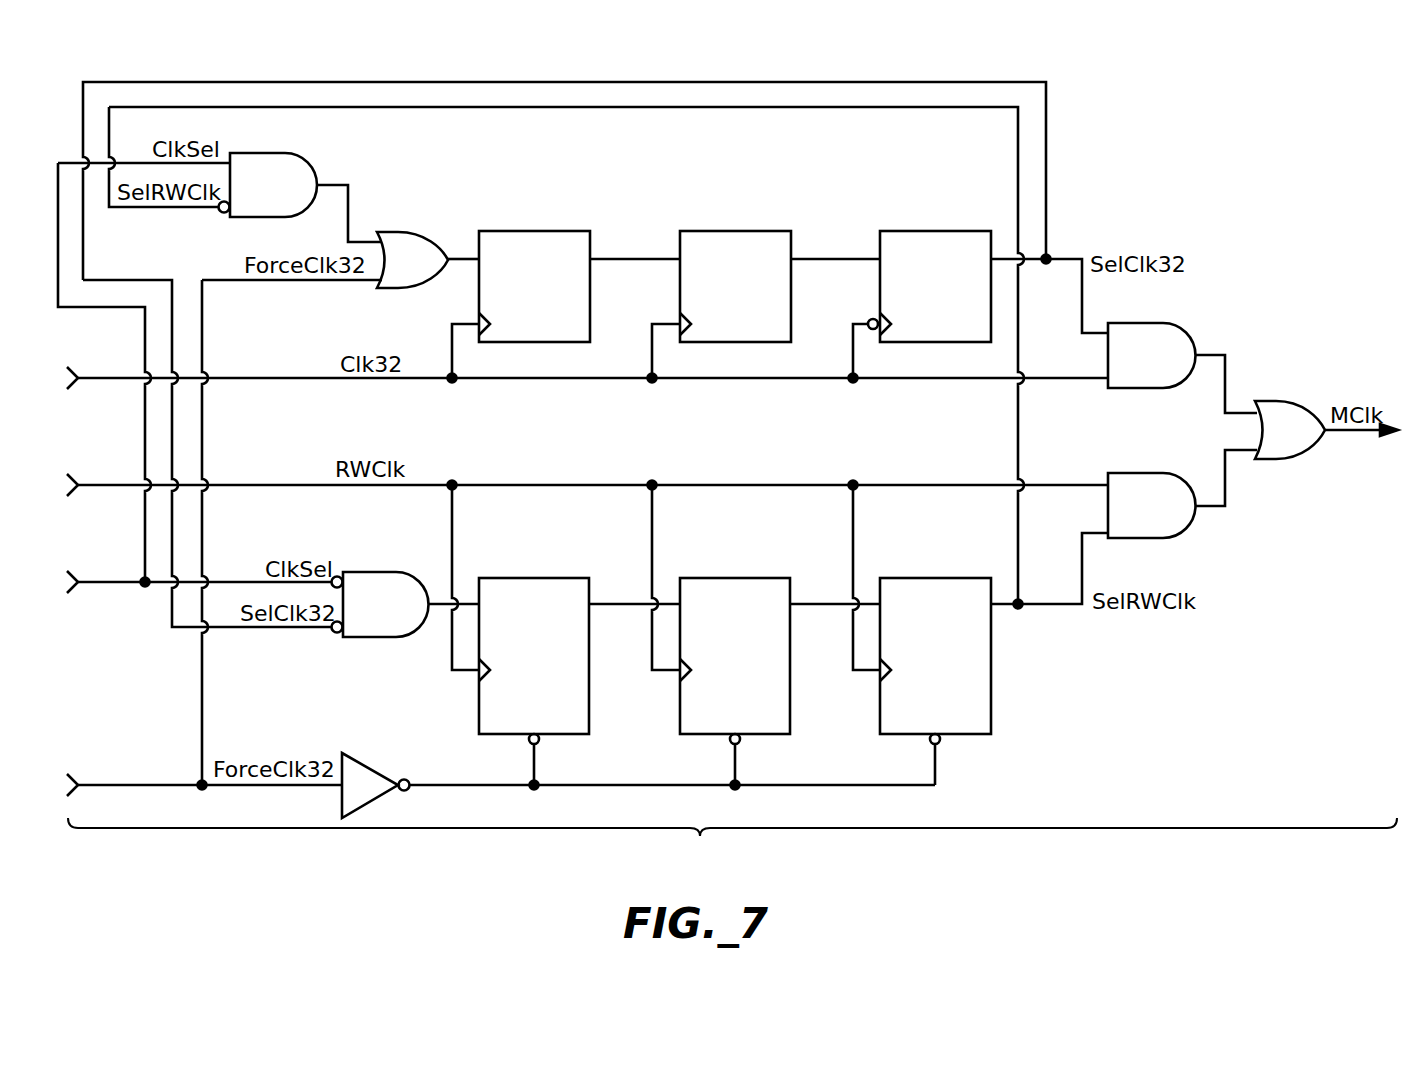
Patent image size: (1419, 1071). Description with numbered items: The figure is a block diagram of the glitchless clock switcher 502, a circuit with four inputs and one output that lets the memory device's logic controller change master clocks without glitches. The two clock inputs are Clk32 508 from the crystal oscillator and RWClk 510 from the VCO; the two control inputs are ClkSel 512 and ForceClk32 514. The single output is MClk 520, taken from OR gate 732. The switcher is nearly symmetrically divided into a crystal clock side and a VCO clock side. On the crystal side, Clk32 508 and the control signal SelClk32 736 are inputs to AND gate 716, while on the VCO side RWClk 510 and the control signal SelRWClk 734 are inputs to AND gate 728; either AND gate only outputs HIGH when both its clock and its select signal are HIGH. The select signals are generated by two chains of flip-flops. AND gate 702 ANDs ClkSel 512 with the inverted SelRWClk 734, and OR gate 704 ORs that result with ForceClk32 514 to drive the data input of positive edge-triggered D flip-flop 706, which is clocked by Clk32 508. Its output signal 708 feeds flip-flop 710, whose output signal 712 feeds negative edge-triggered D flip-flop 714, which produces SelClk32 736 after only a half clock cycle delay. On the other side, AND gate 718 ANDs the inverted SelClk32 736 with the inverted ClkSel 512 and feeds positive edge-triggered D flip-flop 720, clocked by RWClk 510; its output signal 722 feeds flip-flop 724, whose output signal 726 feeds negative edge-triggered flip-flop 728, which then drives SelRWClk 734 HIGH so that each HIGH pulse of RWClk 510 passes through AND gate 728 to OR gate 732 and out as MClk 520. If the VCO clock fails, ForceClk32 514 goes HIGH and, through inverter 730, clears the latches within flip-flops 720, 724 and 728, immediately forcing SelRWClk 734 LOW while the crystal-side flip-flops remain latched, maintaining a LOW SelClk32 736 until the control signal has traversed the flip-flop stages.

The glitchless clock switcher 502 is at (732, 841).
The Clk32 508 is at (128, 376).
The RWClk 510 is at (128, 483).
The ClkSel 512 is at (128, 580).
The ForceClk32 514 is at (128, 783).
The MClk 520 is at (1363, 434).
The AND gate 702 is at (258, 152).
The OR gate 704 is at (394, 232).
The positive edge-triggered D flip-flop 706 is at (535, 231).
The signal 708 is at (631, 257).
The flip-flop 710 is at (733, 231).
The signal 712 is at (831, 257).
The negative edge-triggered D flip-flop 714 is at (930, 231).
The AND gate 716 is at (1135, 323).
The AND gate 718 is at (383, 572).
The positive edge-triggered D flip-flop 720 is at (560, 578).
The output signal 722 is at (628, 603).
The flip-flop 724 is at (762, 578).
The output signal 726 is at (827, 603).
The negative edge-triggered D flip-flop / AND gate 728 is at (1135, 473).
The inverter 730 is at (383, 760).
The OR gate 732 is at (1268, 400).
The SelRWClk 734 is at (1022, 608).
The SelClk32 736 is at (1048, 256).